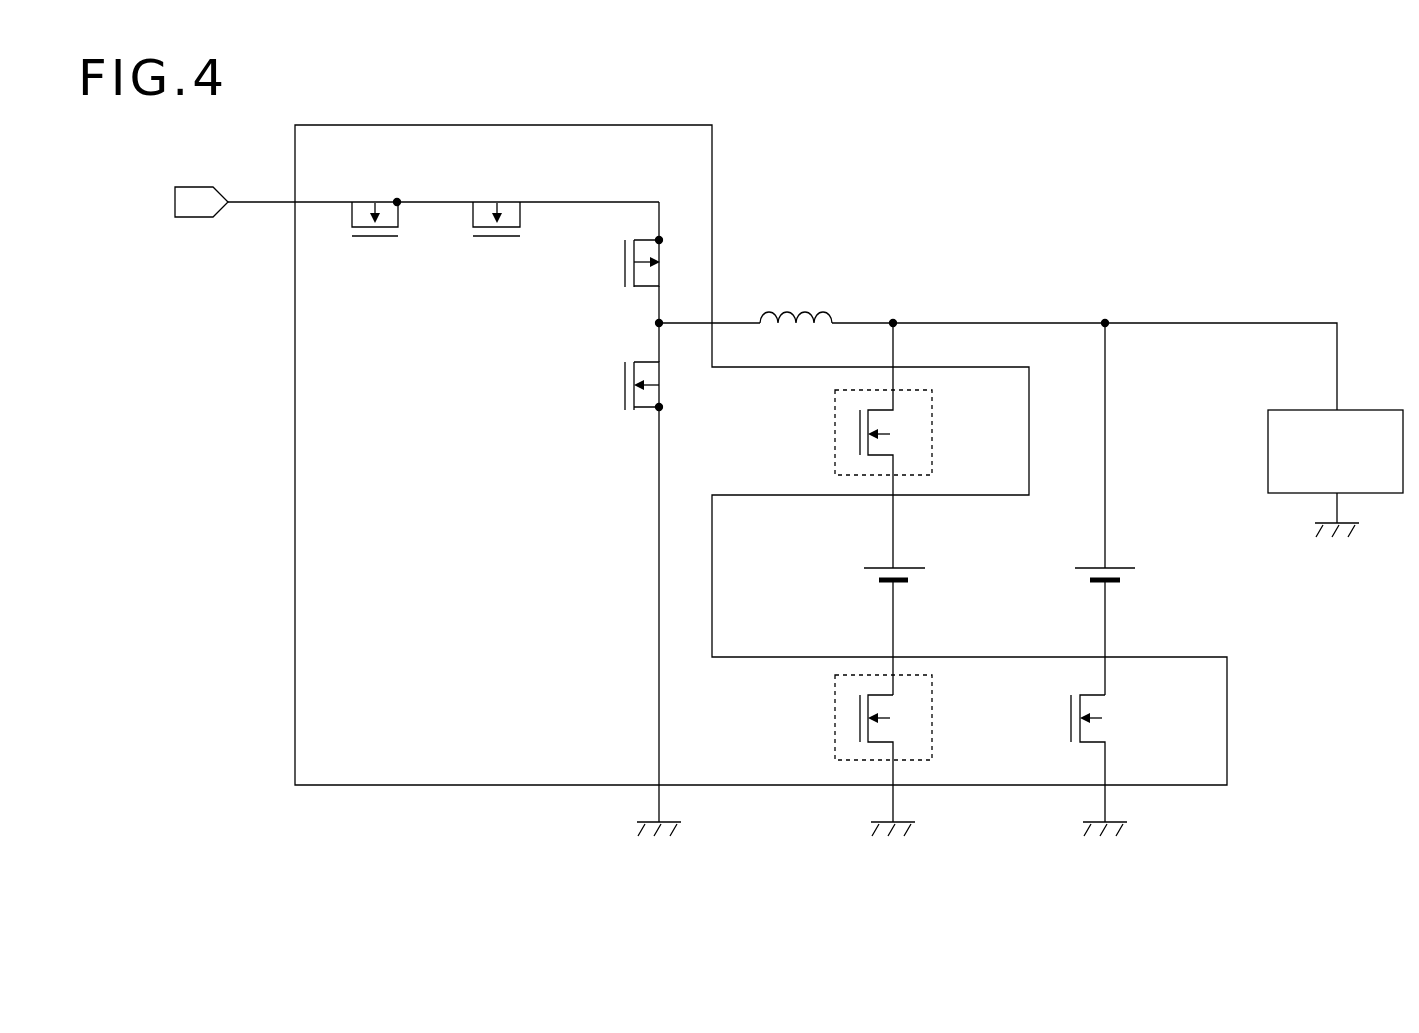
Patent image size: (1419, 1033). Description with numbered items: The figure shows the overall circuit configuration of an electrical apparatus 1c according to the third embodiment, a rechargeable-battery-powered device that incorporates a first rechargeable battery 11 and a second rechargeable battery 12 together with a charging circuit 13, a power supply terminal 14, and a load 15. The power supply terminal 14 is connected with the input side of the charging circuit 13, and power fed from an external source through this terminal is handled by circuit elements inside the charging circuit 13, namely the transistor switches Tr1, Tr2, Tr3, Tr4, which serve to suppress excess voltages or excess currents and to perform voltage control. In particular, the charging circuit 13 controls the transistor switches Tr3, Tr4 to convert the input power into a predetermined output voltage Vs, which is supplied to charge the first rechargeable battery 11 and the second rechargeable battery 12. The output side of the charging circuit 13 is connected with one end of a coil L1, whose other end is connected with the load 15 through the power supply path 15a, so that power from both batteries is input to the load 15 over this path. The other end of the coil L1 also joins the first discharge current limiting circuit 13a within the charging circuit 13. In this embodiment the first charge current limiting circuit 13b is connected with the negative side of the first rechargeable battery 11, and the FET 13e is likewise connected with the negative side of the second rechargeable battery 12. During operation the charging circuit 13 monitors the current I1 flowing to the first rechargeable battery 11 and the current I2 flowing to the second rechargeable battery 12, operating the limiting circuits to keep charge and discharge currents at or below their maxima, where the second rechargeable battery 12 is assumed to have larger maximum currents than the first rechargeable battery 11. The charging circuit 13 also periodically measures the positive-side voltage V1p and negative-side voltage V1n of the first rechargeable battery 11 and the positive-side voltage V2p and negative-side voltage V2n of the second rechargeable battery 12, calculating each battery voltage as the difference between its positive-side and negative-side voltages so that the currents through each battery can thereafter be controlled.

The electrical apparatus 1c is at (1313, 780).
The charging circuit 13 is at (712, 160).
The first discharge current limiting circuit 13a is at (934, 452).
The first charge current limiting circuit 13b is at (934, 738).
The FET 13e is at (1112, 718).
The power supply terminal 14 is at (192, 186).
The first rechargeable battery 11 is at (930, 570).
The second rechargeable battery 12 is at (1140, 573).
The load 15 is at (1335, 473).
The power supply path 15a is at (1283, 322).
The transistor switch Tr1 is at (376, 235).
The transistor switch Tr2 is at (496, 236).
The transistor switch Tr3 is at (620, 244).
The transistor switch Tr4 is at (620, 386).
The coil L1 is at (745, 295).
The output voltage Vs is at (989, 322).
The positive-side voltage V1p is at (891, 537).
The negative-side voltage V1n is at (891, 617).
The positive-side voltage V2p is at (1107, 537).
The negative-side voltage V2n is at (1107, 617).
The current I1 is at (910, 593).
The current I2 is at (1088, 593).